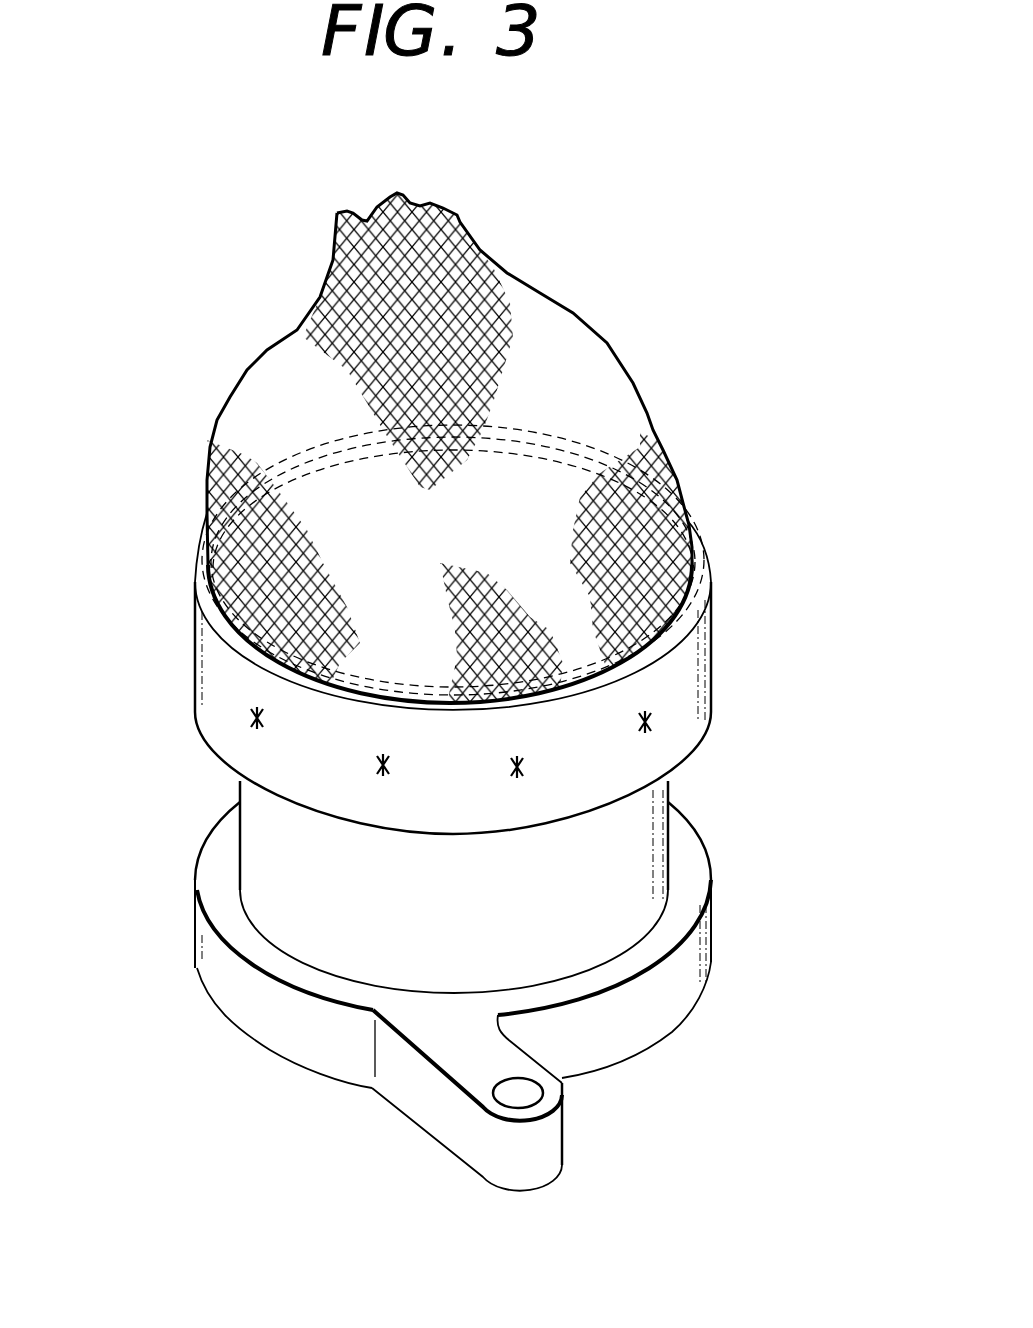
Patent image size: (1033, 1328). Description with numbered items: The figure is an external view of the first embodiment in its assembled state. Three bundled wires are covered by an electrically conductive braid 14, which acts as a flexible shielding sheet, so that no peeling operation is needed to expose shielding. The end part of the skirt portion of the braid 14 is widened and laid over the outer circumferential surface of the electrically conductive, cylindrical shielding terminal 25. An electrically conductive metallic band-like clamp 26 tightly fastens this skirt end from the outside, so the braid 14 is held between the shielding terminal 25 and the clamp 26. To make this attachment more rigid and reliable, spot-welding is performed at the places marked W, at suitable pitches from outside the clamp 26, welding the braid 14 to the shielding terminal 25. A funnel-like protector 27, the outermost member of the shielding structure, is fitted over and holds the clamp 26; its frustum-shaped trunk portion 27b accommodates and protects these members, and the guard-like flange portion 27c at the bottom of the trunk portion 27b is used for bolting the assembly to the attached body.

The electrically conductive braid 14 is at (258, 379).
The shielding terminal 25 is at (560, 447).
The band-like clamp 26 is at (690, 683).
The spot-welding places W is at (378, 763).
The protector 27 is at (695, 795).
The trunk portion 27b is at (630, 922).
The flange portion 27c is at (543, 1157).